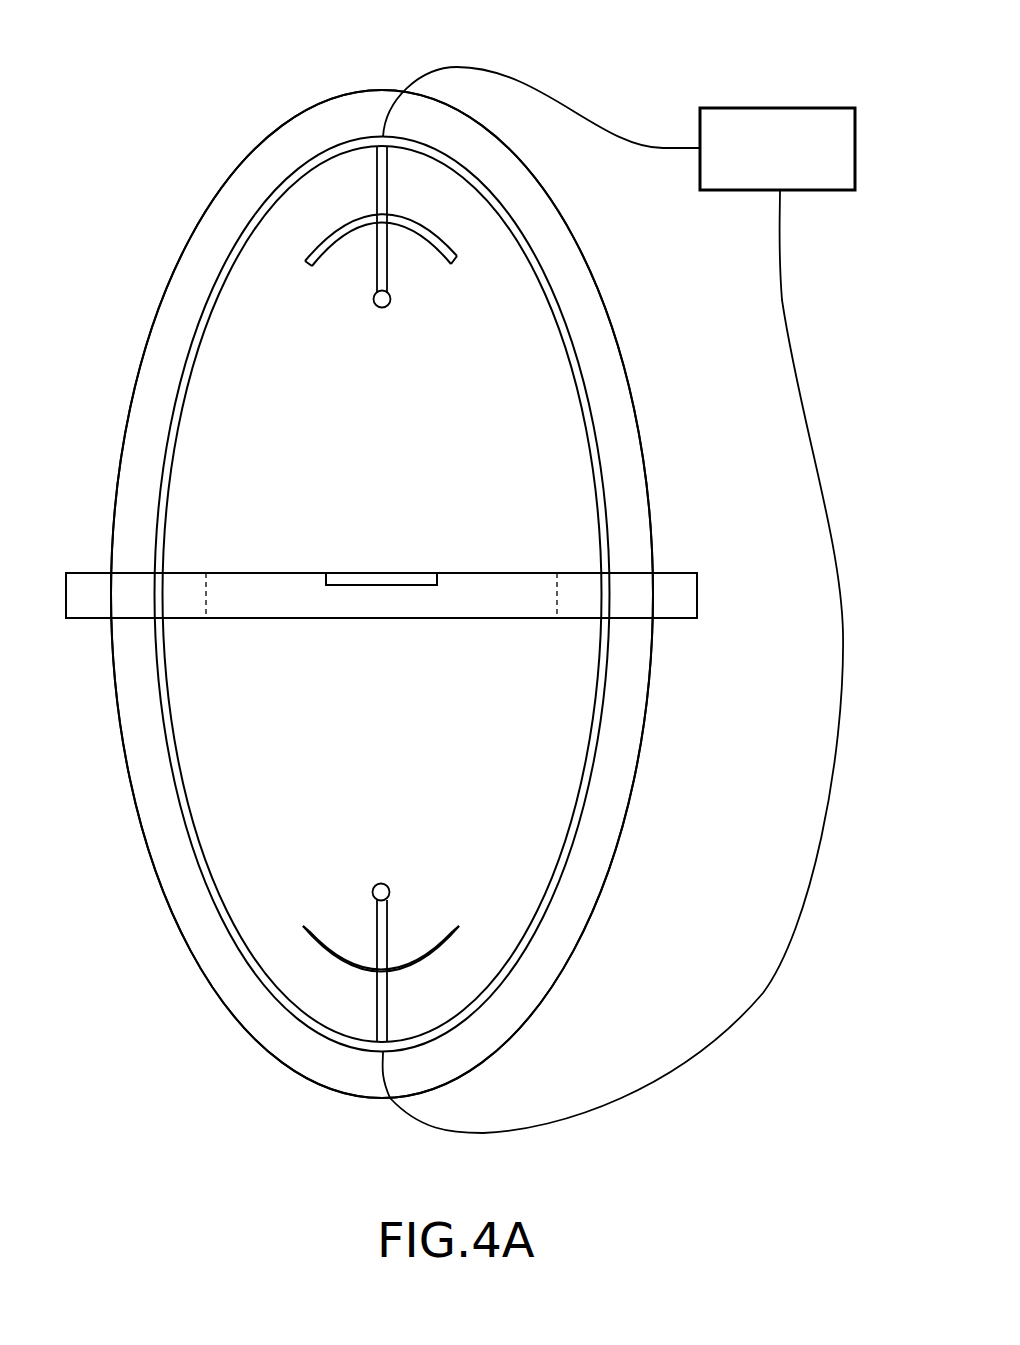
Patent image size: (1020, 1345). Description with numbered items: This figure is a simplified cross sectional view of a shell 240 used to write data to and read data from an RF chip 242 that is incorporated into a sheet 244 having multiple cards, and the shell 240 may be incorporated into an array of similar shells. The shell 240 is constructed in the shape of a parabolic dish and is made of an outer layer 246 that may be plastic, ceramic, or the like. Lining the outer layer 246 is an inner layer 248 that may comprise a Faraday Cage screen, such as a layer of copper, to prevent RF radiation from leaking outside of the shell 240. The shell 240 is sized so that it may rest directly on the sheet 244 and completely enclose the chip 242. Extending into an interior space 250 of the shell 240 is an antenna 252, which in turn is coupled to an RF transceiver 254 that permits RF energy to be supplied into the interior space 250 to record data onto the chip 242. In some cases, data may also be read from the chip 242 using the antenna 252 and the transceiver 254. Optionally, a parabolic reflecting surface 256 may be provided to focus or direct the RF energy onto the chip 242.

The shell 240 is at (622, 455).
The RF chip 242 is at (410, 572).
The sheet 244 is at (697, 594).
The outer layer 246 is at (608, 367).
The inner layer 248 is at (584, 410).
The interior space 250 is at (362, 411).
The antenna 252 is at (388, 302).
The RF transceiver 254 is at (808, 117).
The parabolic reflecting surface 256 is at (457, 260).